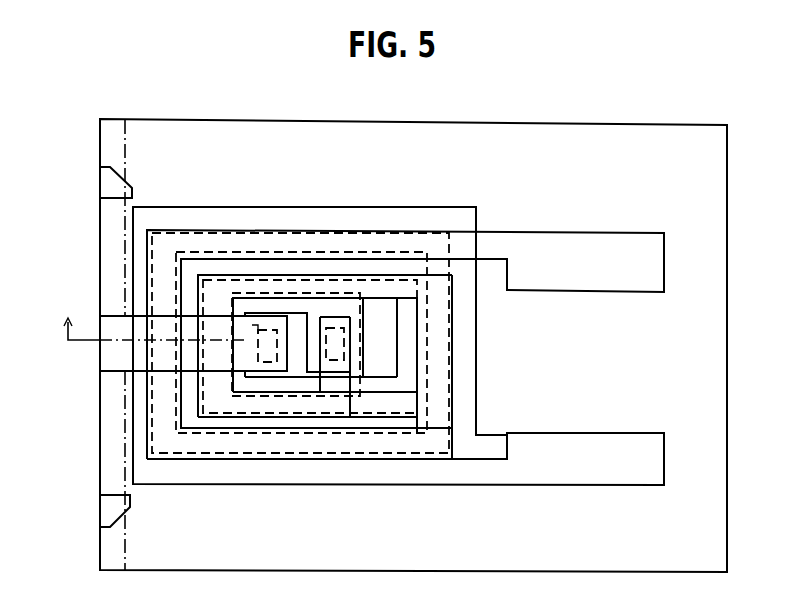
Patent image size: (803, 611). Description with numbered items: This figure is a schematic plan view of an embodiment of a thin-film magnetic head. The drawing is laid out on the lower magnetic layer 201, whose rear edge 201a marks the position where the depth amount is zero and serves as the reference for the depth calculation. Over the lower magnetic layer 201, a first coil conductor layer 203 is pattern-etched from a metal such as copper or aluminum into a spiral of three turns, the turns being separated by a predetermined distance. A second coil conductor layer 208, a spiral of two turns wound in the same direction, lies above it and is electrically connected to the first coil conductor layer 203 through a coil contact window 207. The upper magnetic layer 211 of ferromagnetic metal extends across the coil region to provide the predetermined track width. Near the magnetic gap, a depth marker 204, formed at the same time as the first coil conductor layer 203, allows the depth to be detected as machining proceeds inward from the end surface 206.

The lower magnetic layer 201 is at (640, 174).
The rear edge 201a is at (126, 532).
The first coil conductor layer 203 is at (508, 474).
The depth marker 204 is at (108, 182).
The end surface (facing surface) 206 is at (100, 450).
The coil contact window 207 is at (330, 345).
The second coil conductor layer 208 is at (663, 250).
The upper magnetic layer 211 is at (130, 355).